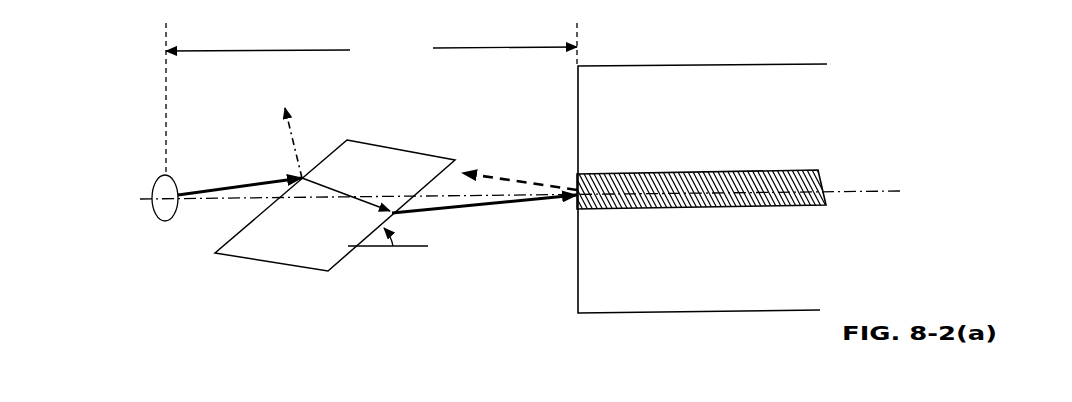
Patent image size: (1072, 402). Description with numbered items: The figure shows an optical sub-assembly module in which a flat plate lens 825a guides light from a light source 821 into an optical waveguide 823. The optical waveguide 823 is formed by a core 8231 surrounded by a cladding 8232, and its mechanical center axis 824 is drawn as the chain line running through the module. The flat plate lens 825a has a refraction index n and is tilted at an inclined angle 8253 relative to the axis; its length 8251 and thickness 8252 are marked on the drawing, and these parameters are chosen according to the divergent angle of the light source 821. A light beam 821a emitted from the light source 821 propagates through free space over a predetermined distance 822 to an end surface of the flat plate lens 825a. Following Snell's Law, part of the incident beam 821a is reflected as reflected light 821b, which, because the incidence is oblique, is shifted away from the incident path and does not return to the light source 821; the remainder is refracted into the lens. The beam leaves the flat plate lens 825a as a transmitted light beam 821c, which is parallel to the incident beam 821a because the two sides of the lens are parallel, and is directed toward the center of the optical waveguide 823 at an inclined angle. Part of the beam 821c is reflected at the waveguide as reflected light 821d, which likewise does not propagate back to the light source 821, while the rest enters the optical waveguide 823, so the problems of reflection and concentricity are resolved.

The light source 821 is at (134, 198).
The incident light beam 821a is at (240, 171).
The reflected light 821b is at (266, 130).
The transmitted light beam 821c is at (439, 204).
The reflected light from the transmitted beam 821d is at (519, 167).
The distance 822 is at (371, 99).
The optical waveguide 823 is at (702, 211).
The core 8231 is at (647, 184).
The cladding 8232 is at (623, 112).
The mechanical center axis 824 is at (551, 187).
The flat plate lens 825a is at (335, 205).
The length L of the lens 8251 is at (213, 252).
The thickness T of the lens 8252 is at (368, 143).
The inclined angle θ 8253 is at (388, 250).